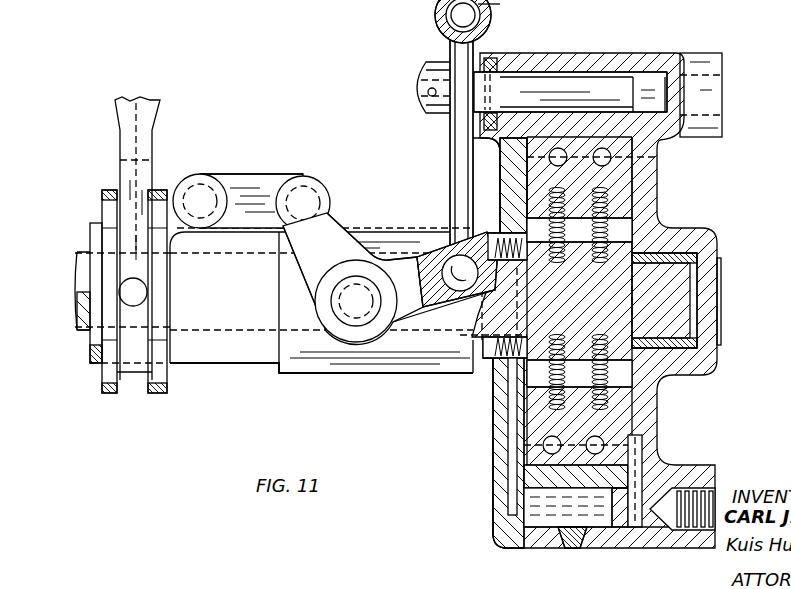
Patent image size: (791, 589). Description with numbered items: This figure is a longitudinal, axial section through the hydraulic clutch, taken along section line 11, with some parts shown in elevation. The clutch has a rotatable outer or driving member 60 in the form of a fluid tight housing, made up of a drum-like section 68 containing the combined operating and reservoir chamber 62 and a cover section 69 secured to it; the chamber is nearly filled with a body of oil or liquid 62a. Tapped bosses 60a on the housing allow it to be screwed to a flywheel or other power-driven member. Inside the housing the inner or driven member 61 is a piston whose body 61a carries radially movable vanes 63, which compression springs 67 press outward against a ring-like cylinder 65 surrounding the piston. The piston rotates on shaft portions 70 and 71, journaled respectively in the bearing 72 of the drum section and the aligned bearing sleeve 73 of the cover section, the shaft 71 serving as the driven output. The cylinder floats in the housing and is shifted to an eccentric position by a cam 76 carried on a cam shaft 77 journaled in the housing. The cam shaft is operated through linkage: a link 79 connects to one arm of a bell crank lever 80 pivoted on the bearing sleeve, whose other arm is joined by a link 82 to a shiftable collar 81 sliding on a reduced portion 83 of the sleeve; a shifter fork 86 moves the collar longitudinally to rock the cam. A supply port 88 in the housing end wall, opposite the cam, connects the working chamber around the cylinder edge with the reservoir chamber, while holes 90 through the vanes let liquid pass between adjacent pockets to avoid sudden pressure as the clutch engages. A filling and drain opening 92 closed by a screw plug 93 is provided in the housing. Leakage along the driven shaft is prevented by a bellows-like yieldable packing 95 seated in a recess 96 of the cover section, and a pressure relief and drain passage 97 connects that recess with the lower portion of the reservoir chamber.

The section line 11 is at (490, 7).
The outer or driving member 60 is at (665, 54).
The tapped bosses 60a is at (712, 472).
The inner or driven member 61 is at (618, 240).
The body of the piston 61a is at (572, 250).
The combined operating and reservoir chamber 62 is at (533, 508).
The liquid 62a is at (615, 525).
The vanes 63 is at (635, 197).
The cylinder member 65 is at (608, 488).
The compression springs 67 is at (579, 374).
The drum-like member or section 68 is at (632, 192).
The cover member or section 69 is at (498, 178).
The shaft portion 70 is at (668, 268).
The shaft portion 71 is at (80, 332).
The bearing 72 is at (683, 350).
The bearing sleeve 73 is at (352, 370).
The cam 76 is at (588, 83).
The cam shaft 77 is at (503, 82).
The link 79 is at (447, 158).
The bell crank lever 80 is at (406, 262).
The shiftable collar 81 is at (162, 385).
The link 82 is at (258, 180).
The reduced portion 83 is at (240, 363).
The shifter fork 86 is at (165, 142).
The supply port 88 is at (648, 458).
The passages or holes 90 is at (665, 152).
The filling and drain opening 92 is at (565, 540).
The screw plug 93 is at (582, 543).
The bellows-like yieldable packing 95 is at (497, 355).
The recess 96 is at (497, 388).
The pressure relief and drain passage 97 is at (512, 470).